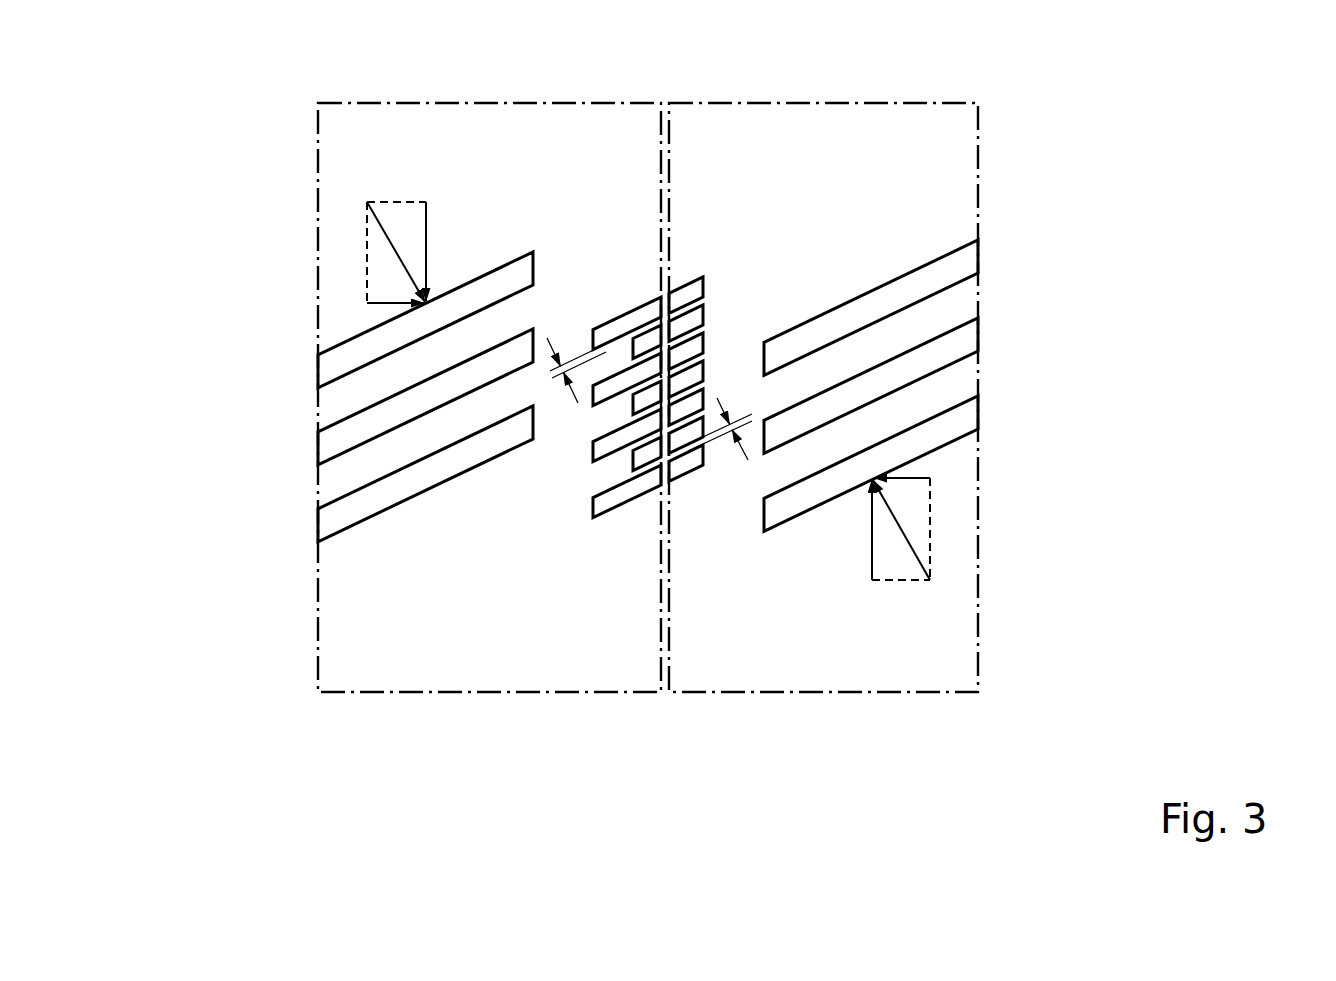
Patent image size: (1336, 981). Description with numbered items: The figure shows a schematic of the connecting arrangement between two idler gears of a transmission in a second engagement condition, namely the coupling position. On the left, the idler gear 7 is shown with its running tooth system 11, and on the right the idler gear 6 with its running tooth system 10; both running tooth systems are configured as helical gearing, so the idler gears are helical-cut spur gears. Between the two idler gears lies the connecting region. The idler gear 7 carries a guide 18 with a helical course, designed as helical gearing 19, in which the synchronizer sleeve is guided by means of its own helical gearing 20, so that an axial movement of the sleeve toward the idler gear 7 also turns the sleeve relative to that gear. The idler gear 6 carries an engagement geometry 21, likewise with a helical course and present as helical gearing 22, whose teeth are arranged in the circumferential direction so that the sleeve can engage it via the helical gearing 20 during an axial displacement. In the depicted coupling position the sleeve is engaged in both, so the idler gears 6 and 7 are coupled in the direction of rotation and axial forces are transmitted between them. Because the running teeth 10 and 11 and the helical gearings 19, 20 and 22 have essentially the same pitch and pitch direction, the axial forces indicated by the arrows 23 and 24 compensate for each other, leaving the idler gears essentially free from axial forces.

The idler gear 6 is at (862, 140).
The idler gear 7 is at (375, 128).
The running tooth system 10 is at (953, 269).
The running tooth system 11 is at (337, 362).
The guide 18 is at (626, 323).
The helical gearing 19 is at (596, 304).
The helical gearing 20 is at (647, 455).
The engagement geometry 21 is at (687, 295).
The helical gearing 22 is at (687, 486).
The arrow 23 is at (382, 307).
The arrow 24 is at (934, 470).